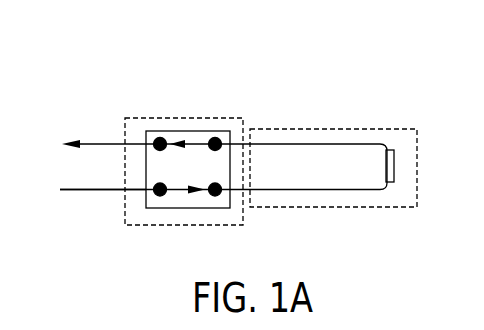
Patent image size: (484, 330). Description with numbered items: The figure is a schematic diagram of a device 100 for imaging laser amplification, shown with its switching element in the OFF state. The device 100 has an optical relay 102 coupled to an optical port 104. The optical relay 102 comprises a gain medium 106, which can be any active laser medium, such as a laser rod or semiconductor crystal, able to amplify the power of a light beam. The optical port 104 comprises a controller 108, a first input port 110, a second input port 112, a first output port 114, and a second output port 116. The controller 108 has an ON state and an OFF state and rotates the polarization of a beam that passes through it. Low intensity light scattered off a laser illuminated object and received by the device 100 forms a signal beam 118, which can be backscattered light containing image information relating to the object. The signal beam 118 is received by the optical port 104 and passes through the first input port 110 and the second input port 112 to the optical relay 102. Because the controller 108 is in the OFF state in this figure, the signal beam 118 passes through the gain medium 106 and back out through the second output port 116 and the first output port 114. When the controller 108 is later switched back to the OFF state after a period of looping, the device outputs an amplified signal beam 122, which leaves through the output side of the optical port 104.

The device 100 is at (383, 67).
The optical relay 102 is at (329, 117).
The optical port 104 is at (204, 106).
The gain medium 106 is at (395, 163).
The controller 108 is at (189, 168).
The first input port 110 is at (158, 196).
The second input port 112 is at (218, 196).
The first output port 114 is at (155, 138).
The second output port 116 is at (219, 138).
The signal beam 118 is at (83, 191).
The amplified signal beam 122 is at (93, 142).